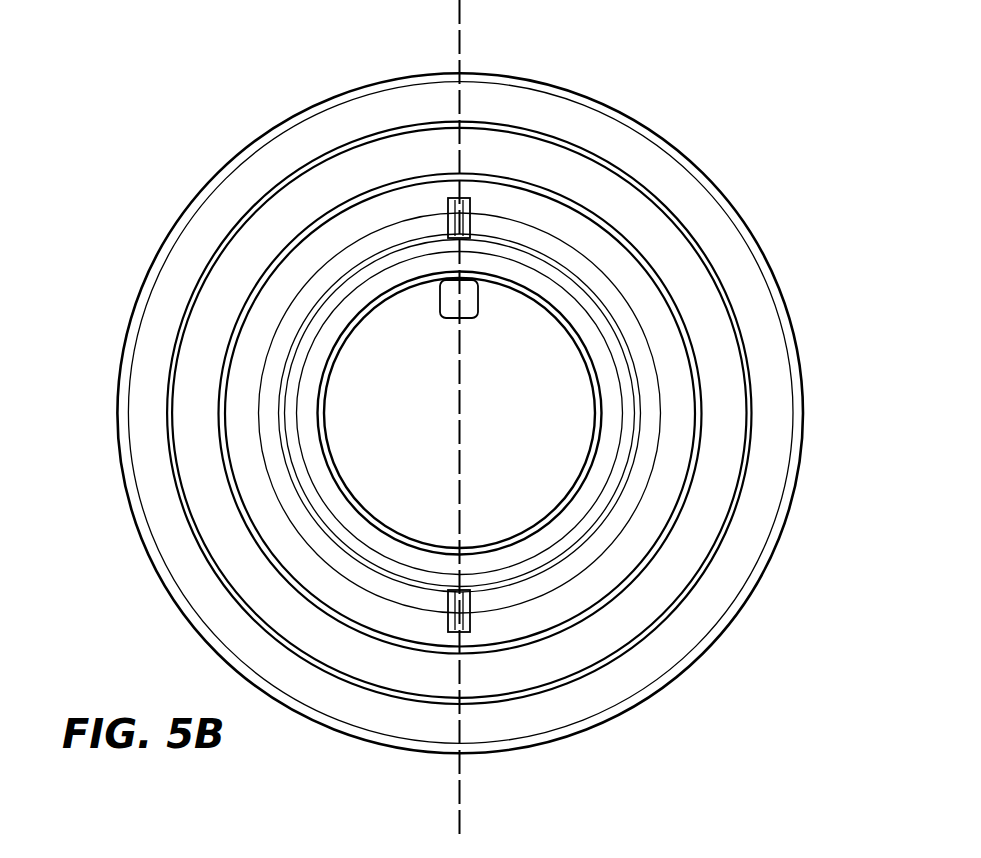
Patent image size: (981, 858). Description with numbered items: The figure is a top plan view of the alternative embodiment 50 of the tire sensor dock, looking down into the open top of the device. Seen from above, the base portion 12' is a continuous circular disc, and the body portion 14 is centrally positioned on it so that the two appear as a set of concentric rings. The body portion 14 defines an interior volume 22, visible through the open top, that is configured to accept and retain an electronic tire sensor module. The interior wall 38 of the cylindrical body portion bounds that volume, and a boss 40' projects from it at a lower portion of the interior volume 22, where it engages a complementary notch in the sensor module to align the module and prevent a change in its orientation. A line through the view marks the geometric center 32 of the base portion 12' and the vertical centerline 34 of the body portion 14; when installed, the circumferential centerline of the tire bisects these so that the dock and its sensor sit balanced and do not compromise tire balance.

The base portion 12' is at (457, 413).
The body portion 14 is at (355, 282).
The interior volume 22 is at (512, 308).
The geometric center 32 is at (511, 419).
The vertical centerline 34 is at (462, 37).
The interior wall 38 is at (396, 326).
The boss 40' is at (625, 415).
The alternative embodiment 50 is at (192, 133).